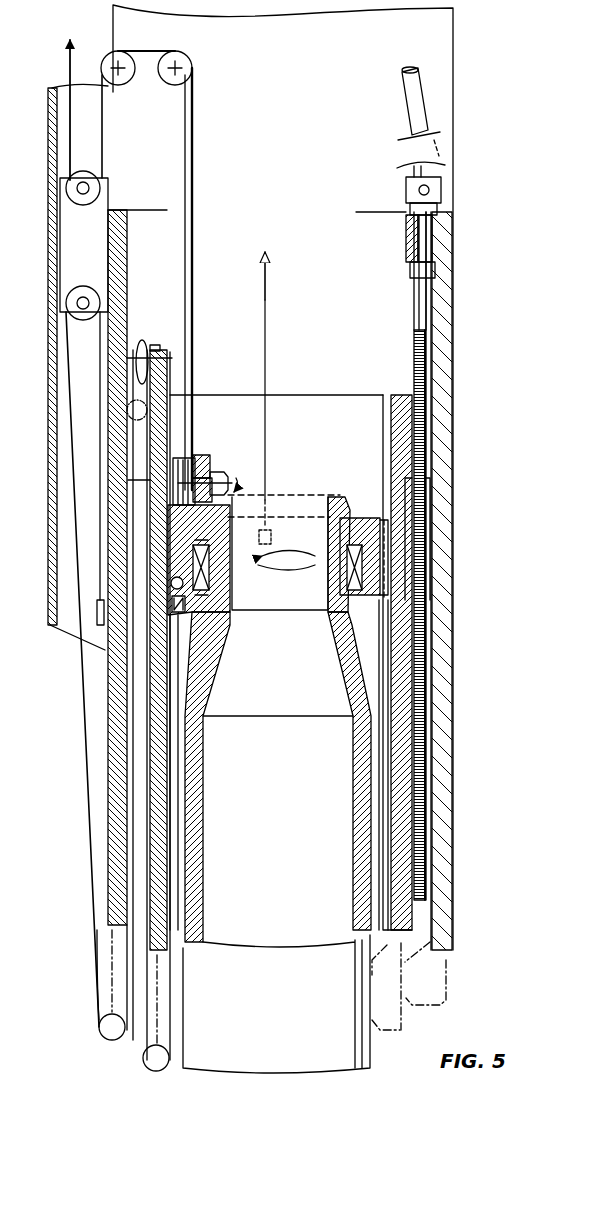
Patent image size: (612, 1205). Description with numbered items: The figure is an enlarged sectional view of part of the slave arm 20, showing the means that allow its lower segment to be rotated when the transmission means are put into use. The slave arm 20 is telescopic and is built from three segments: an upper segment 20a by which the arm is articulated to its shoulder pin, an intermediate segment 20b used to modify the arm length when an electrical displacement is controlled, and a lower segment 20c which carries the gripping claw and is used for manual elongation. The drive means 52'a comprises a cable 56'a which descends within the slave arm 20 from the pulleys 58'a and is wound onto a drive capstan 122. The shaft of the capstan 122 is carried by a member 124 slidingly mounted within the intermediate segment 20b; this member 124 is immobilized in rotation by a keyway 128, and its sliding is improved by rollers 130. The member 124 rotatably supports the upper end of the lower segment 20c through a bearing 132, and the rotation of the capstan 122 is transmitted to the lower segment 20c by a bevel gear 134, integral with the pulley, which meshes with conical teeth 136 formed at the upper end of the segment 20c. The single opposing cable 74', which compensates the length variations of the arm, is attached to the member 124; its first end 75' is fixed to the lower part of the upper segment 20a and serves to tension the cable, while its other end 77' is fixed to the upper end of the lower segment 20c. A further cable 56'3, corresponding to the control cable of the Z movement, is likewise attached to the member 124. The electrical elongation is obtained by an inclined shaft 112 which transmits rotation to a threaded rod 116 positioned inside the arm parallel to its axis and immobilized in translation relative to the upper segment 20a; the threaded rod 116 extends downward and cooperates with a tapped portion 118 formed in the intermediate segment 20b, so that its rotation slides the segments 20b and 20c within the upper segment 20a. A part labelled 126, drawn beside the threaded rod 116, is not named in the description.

The slave arm 20 is at (472, 746).
The upper segment 20a is at (440, 343).
The intermediate segment 20b is at (400, 612).
The lower segment 20c is at (345, 955).
The drive means 52'a is at (240, 625).
The cable 56'a is at (175, 279).
The cable 56'3 is at (286, 398).
The pulleys 58'a is at (171, 57).
The opposing cable 74' is at (63, 533).
The first end of opposing cable 75' is at (61, 380).
The other end of opposing cable 77' is at (282, 771).
The inclined shaft 112 is at (410, 100).
The threaded rod 116 is at (432, 310).
The tapped portion 118 is at (400, 415).
The drive capstan 122 is at (190, 458).
The member 124 is at (372, 518).
The nut 126 is at (386, 540).
The keyway 128 is at (384, 684).
The rollers 130 is at (186, 620).
The bearing 132 is at (208, 600).
The bevel gear 134 is at (208, 460).
The conical teeth 136 is at (340, 497).